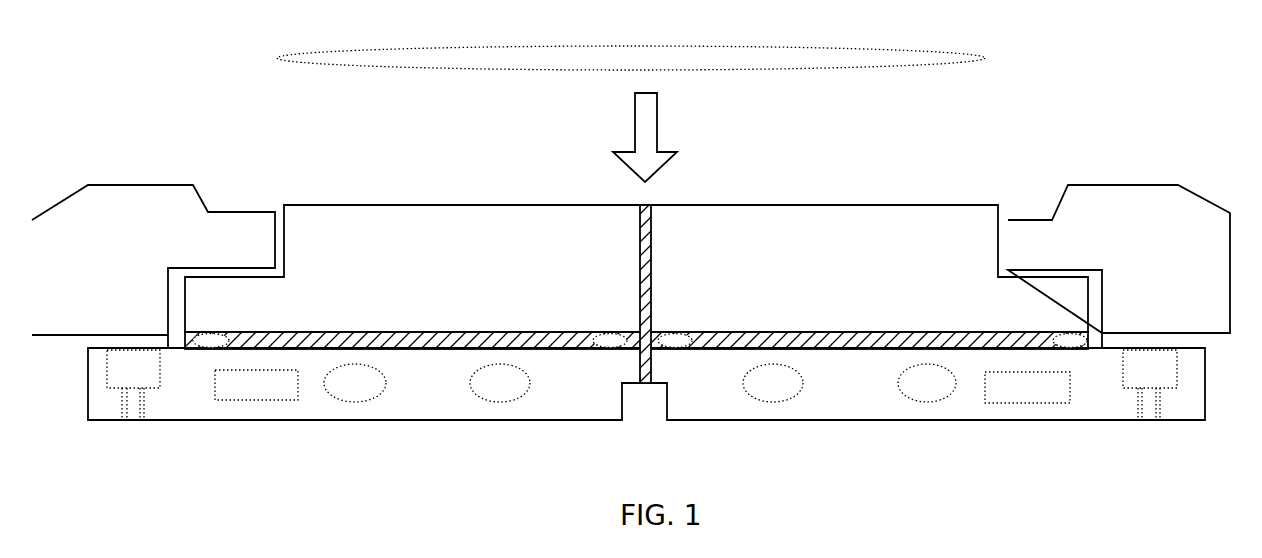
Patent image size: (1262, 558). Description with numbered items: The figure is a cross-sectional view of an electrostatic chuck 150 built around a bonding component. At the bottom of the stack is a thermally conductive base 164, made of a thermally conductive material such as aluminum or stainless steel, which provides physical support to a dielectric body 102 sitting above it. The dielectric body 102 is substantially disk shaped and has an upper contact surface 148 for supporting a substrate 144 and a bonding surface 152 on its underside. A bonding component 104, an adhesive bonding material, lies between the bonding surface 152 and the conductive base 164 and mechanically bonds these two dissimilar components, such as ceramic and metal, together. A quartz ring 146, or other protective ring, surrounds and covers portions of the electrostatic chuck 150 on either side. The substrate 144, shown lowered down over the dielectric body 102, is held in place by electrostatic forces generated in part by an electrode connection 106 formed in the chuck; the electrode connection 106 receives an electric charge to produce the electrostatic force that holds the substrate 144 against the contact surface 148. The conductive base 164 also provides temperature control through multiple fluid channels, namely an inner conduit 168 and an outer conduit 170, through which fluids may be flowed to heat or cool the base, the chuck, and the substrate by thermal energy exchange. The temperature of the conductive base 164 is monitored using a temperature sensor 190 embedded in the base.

The dielectric body 102 is at (833, 269).
The bonding component 104 is at (563, 349).
The electrode connection 106 is at (637, 282).
The substrate 144 is at (835, 68).
The quartz ring 146 is at (142, 256).
The upper contact surface 148 is at (763, 205).
The electrostatic chuck 150 is at (111, 88).
The bonding surface 152 is at (442, 332).
The thermally conductive base 164 is at (865, 397).
The inner conduit 168 is at (500, 402).
The outer conduit 170 is at (355, 402).
The temperature sensor 190 is at (258, 400).